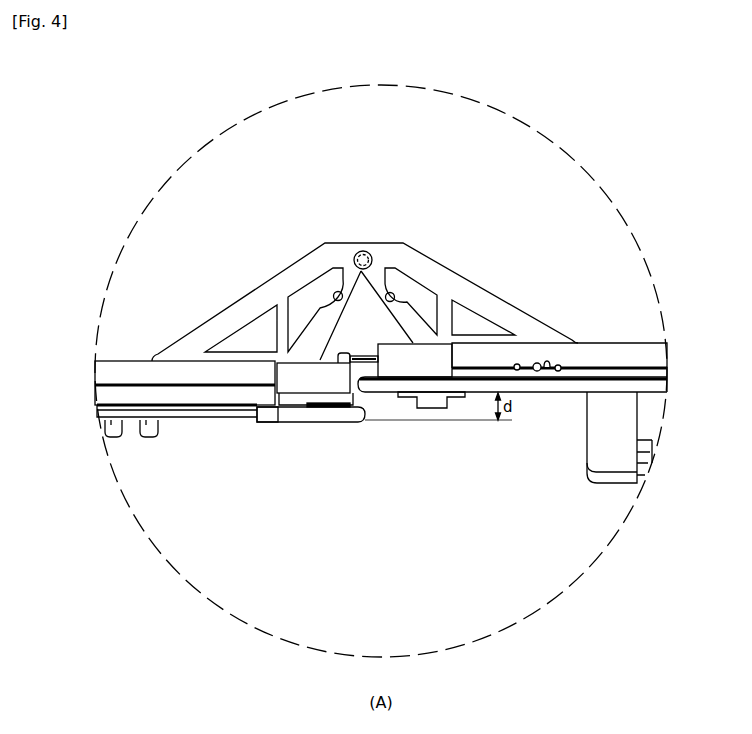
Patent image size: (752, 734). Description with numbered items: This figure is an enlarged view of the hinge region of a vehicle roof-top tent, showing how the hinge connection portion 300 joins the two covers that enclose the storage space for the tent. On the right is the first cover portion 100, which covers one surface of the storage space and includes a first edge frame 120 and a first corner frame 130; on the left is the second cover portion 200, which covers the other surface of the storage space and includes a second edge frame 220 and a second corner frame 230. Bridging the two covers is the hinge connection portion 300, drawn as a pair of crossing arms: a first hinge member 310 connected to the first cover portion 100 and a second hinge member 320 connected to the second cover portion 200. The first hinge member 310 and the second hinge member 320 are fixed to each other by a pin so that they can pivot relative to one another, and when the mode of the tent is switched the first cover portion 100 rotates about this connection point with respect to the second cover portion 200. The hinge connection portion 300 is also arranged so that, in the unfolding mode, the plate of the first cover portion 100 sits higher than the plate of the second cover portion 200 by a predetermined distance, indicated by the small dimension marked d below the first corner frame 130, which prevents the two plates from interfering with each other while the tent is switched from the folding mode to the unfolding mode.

The first cover portion 100 is at (650, 346).
The first edge frame 120 is at (657, 358).
The first corner frame 130 is at (388, 387).
The second cover portion 200 is at (115, 364).
The second edge frame 220 is at (118, 394).
The second corner frame 230 is at (322, 415).
The hinge connection portion 300 is at (303, 190).
The first hinge member 310 is at (397, 248).
The second hinge member 320 is at (327, 248).